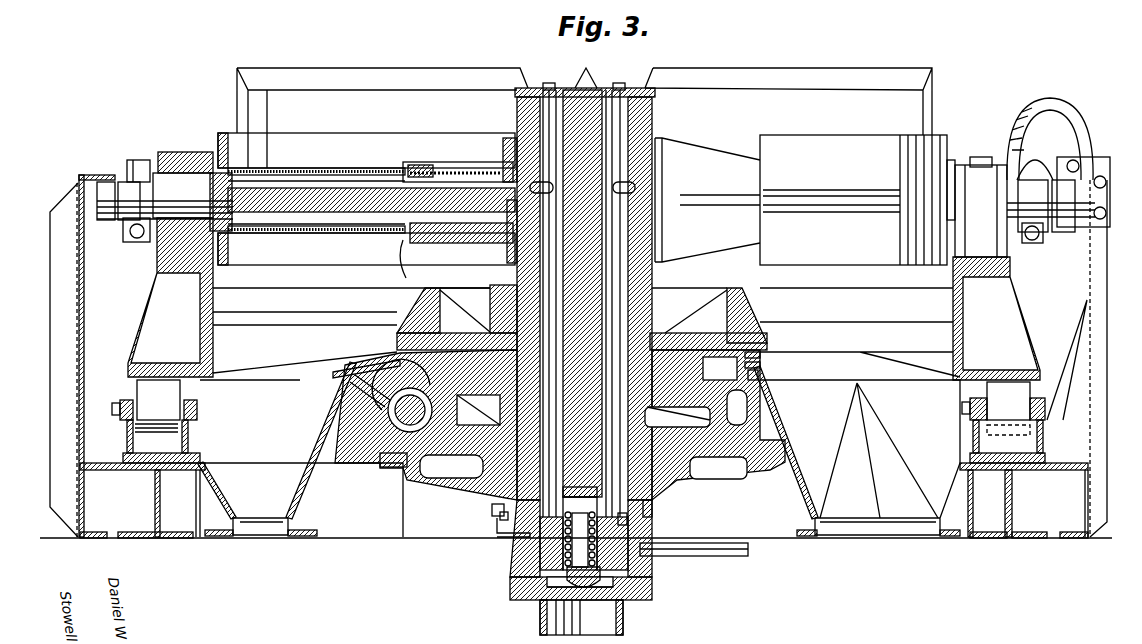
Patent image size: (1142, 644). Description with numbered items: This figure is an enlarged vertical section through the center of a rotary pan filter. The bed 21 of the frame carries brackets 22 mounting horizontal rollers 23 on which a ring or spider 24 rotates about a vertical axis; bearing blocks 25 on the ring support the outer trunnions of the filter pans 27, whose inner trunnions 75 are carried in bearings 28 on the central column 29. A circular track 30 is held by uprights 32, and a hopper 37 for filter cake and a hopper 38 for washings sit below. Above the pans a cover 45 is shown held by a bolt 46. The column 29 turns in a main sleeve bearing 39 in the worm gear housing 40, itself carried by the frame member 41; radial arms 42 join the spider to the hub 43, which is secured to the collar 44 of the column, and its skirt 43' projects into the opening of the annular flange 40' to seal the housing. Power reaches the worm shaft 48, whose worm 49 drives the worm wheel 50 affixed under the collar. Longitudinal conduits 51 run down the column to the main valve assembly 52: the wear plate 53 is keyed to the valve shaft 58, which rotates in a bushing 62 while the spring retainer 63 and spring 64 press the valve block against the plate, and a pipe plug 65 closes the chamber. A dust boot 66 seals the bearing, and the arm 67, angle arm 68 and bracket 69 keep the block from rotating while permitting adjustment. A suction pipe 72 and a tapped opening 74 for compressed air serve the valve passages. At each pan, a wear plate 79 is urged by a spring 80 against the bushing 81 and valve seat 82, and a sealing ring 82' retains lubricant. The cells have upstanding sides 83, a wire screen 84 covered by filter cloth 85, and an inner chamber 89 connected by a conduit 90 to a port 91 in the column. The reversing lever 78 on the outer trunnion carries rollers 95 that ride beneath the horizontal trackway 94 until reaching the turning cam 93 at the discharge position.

The bed 21 is at (184, 540).
The brackets 22 is at (127, 437).
The horizontal rollers 23 is at (137, 388).
The ring or spider 24 is at (1014, 315).
The bearing blocks 25 is at (190, 146).
The filter pans 27 is at (326, 133).
The bearings 28 is at (702, 158).
The central column 29 is at (652, 118).
The circular track 30 is at (79, 184).
The uprights 32 is at (52, 330).
The hopper 37 is at (870, 537).
The hopper 38 is at (271, 537).
The main sleeve bearing 39 is at (662, 482).
The worm gear box or housing 40 is at (425, 425).
The annular flange 40' is at (772, 361).
The frame member 41 is at (405, 538).
The radial structural arms 42 is at (845, 352).
The hub 43 is at (757, 315).
The cylindrical skirt portion 43' is at (776, 388).
The collar 44 is at (666, 335).
The cover 45 is at (386, 68).
The bolt 46 is at (620, 82).
The worm shaft 48 is at (425, 420).
The worm 49 is at (378, 414).
The worm wheel 50 is at (470, 425).
The longitudinal conduits 51 is at (540, 307).
The main valve assembly 52 is at (527, 550).
The combined wear plate and valve block support 53 is at (600, 498).
The valve shaft 58 is at (572, 497).
The bushing 62 is at (622, 520).
The combination bushing and spring retainer 63 is at (550, 590).
The spring 64 is at (570, 547).
The pipe plug 65 is at (590, 586).
The dust boot 66 is at (652, 516).
The arm 67 is at (500, 535).
The angle arm 68 is at (492, 507).
The bracket 69 is at (500, 516).
The suction pipe 72 is at (625, 620).
The tapped opening 74 is at (648, 556).
The radial inner trunnion 75 is at (418, 162).
The reversing lever 78 is at (139, 160).
The wear plate 79 is at (500, 165).
The spring 80 is at (462, 165).
The bushing 81 is at (435, 243).
The valve seat 82 is at (500, 239).
The sealing ring 82' is at (409, 266).
The upstanding sides 83 is at (400, 136).
The rigid wire screen 84 is at (300, 181).
The filter cloth 85 is at (292, 168).
The inner chamber 89 is at (340, 188).
The conduit 90 is at (436, 168).
The port 91 is at (545, 186).
The segmental turning cam 93 is at (1085, 115).
The horizontal trackway 94 is at (108, 182).
The rollers 95 is at (118, 220).